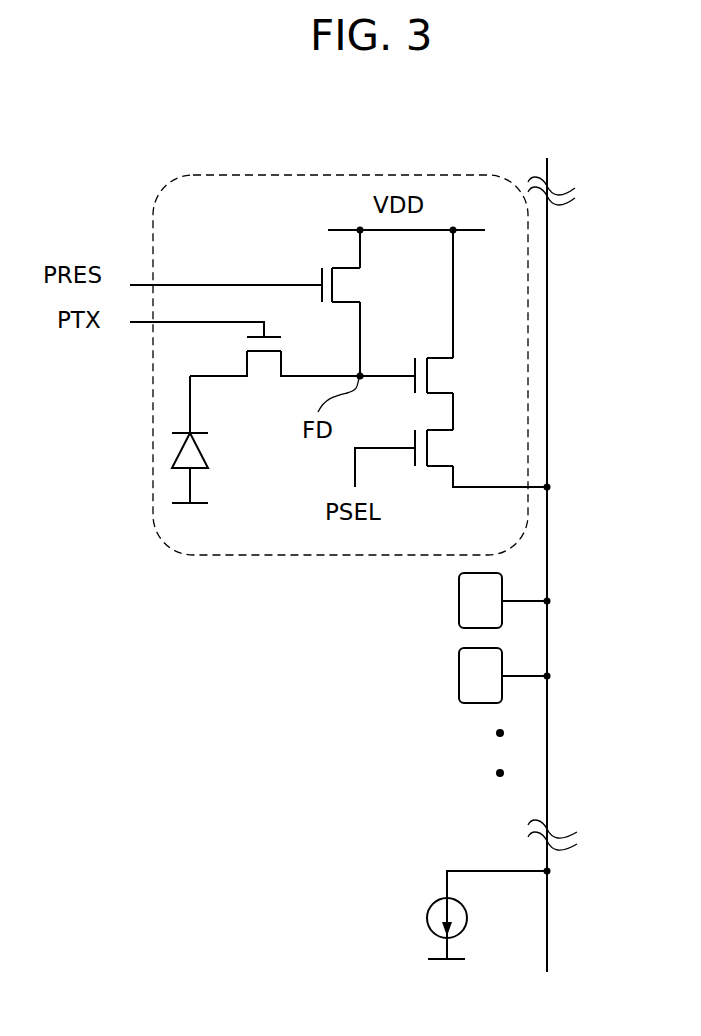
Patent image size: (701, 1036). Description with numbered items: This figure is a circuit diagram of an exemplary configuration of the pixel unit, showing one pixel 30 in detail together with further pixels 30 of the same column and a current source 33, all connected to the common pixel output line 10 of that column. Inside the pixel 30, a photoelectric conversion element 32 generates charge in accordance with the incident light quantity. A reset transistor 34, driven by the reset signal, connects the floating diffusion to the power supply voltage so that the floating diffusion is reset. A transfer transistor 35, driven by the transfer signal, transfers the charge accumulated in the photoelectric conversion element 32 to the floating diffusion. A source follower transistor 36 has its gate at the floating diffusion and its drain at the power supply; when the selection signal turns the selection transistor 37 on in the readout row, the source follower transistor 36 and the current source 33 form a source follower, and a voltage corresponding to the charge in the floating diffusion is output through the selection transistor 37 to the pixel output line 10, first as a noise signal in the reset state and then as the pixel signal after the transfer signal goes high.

The pixel output line 10 is at (548, 273).
The pixel 30 is at (247, 558).
The photoelectric conversion element 32 is at (180, 468).
The current source 33 is at (425, 921).
The reset transistor 34 is at (323, 267).
The transfer transistor 35 is at (247, 358).
The source follower transistor 36 is at (443, 378).
The selection transistor 37 is at (443, 452).